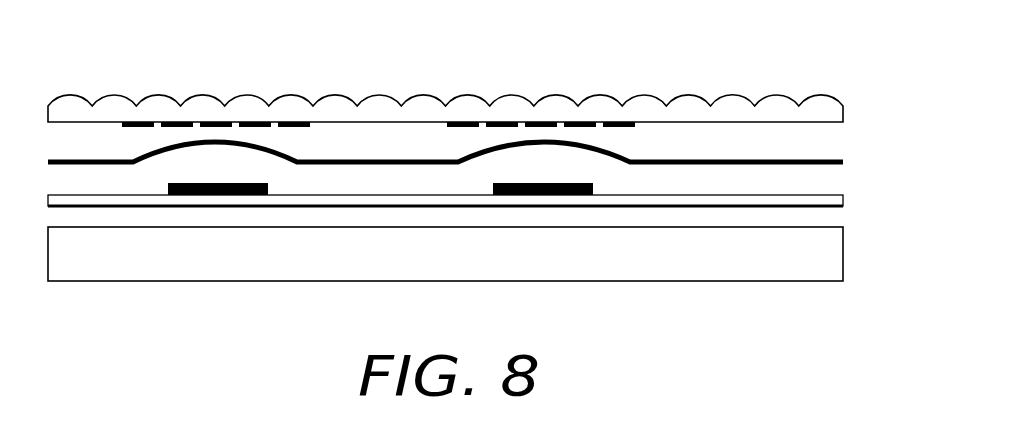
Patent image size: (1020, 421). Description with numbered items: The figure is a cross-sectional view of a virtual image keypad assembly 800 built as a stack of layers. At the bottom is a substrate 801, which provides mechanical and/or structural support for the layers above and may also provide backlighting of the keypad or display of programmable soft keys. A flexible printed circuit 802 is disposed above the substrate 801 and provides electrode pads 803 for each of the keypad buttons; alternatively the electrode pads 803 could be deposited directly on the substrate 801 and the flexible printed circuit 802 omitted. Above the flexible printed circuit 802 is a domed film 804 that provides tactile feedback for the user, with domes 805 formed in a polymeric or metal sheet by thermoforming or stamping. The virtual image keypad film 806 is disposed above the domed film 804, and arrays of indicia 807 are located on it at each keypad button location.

The virtual image keypad assembly 800 is at (192, 288).
The substrate 801 is at (823, 252).
The flexible printed circuit 802 is at (823, 195).
The electrode pads 803 is at (215, 184).
The domed film 804 is at (827, 158).
The domes 805 is at (546, 184).
The virtual image keypad film 806 is at (775, 108).
The indicia 807 is at (462, 122).